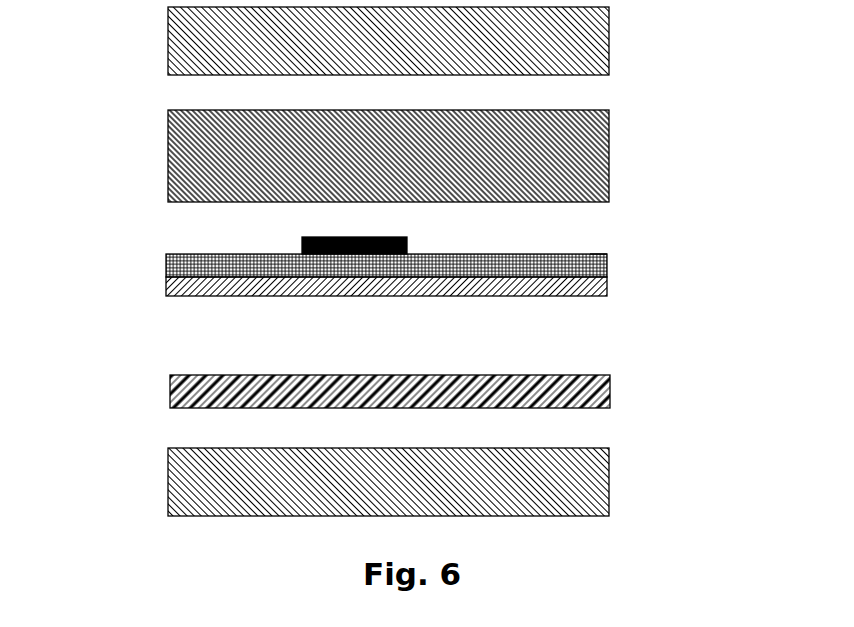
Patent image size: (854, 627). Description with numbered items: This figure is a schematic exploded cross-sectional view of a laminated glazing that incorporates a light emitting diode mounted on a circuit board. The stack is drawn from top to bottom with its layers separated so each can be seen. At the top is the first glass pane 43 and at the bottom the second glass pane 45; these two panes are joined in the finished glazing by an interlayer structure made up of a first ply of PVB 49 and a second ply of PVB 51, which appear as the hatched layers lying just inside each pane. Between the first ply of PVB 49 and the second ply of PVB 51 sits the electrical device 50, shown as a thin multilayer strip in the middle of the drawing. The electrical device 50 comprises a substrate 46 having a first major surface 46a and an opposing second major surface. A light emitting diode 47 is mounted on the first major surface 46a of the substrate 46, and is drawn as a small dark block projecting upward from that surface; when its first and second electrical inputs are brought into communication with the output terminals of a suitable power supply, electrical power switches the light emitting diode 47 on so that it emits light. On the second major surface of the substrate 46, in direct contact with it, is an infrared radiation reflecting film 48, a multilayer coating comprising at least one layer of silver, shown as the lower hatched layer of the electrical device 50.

The first glass pane 43 is at (197, 53).
The first ply of PVB 49 is at (580, 147).
The light emitting diode 47 is at (302, 237).
The substrate 46 is at (607, 265).
The first major surface 46a is at (595, 250).
The infrared radiation reflecting film 48 is at (607, 283).
The electrical device 50 is at (408, 276).
The second ply of PVB 51 is at (608, 388).
The second glass pane 45 is at (183, 477).